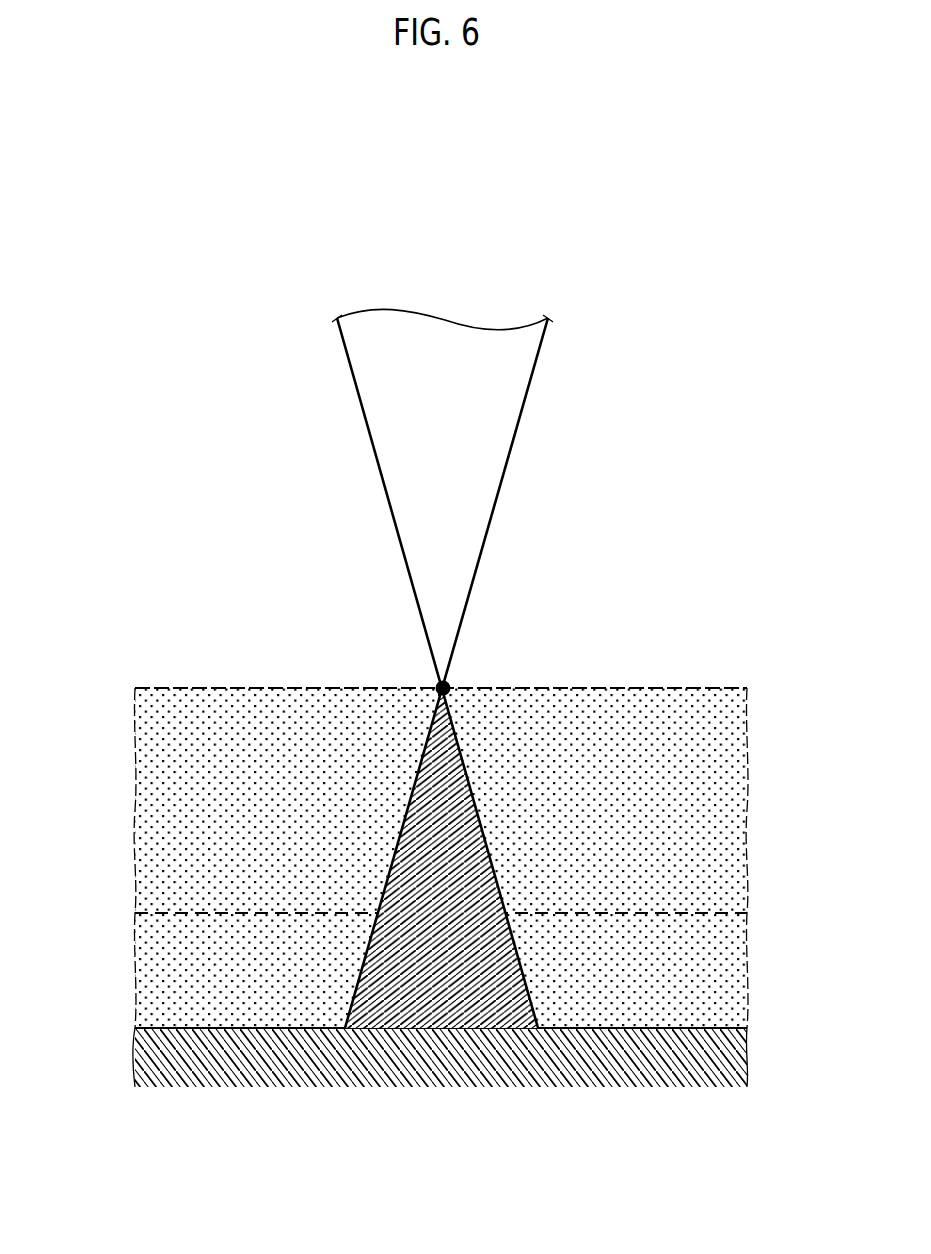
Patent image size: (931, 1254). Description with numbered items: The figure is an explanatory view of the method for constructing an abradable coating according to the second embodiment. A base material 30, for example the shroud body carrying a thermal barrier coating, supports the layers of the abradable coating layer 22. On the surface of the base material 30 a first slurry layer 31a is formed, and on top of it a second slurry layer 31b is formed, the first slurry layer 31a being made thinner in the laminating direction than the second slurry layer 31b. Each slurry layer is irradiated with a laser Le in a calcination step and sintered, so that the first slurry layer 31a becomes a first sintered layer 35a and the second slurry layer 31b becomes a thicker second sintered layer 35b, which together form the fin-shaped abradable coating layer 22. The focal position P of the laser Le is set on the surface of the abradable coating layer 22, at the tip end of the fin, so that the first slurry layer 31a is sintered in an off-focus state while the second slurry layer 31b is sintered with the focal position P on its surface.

The laser Le is at (488, 533).
The focal position P is at (448, 681).
The abradable coating layer 22 is at (374, 816).
The base material 30 is at (183, 1028).
The first slurry layer 31a is at (723, 940).
The second slurry layer 31b is at (723, 763).
The first sintered layer 35a is at (485, 990).
The second sintered layer 35b is at (452, 832).